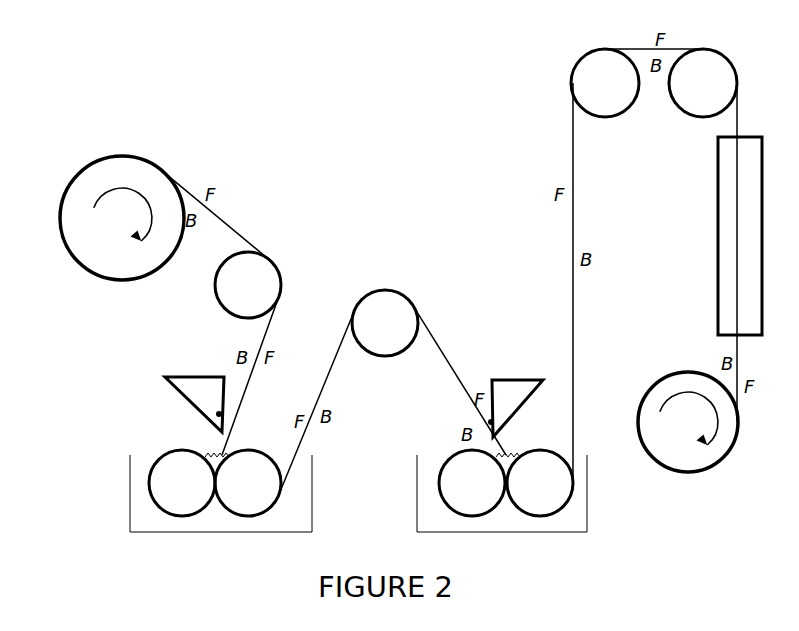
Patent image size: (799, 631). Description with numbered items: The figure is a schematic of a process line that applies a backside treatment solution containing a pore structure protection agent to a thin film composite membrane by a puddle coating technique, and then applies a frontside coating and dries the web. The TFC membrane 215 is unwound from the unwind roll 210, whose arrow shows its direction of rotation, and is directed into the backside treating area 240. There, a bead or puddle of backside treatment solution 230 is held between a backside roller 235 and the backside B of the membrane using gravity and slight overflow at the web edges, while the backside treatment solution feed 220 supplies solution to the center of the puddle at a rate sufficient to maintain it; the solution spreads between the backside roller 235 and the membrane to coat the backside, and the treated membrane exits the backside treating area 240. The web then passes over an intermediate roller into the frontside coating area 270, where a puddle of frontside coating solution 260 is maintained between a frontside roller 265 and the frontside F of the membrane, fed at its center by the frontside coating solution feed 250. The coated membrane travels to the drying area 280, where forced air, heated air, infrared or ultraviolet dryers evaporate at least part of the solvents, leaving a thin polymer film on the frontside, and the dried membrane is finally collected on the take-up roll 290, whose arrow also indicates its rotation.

The unwind roll 210 is at (95, 264).
The TFC membrane 215 is at (233, 230).
The backside treatment solution feed 220 is at (198, 397).
The backside treatment solution 230 is at (202, 452).
The backside roller 235 is at (163, 485).
The backside treating area 240 is at (317, 477).
The frontside coating solution feed 250 is at (507, 397).
The frontside coating solution 260 is at (512, 457).
The frontside roller 265 is at (568, 485).
The frontside coating area 270 is at (415, 492).
The drying area 280 is at (718, 232).
The take-up roll 290 is at (678, 455).